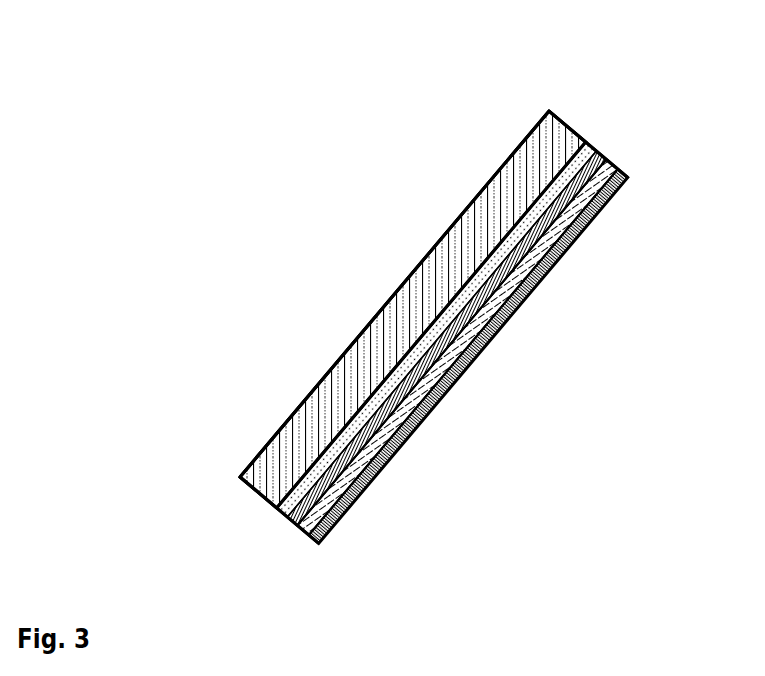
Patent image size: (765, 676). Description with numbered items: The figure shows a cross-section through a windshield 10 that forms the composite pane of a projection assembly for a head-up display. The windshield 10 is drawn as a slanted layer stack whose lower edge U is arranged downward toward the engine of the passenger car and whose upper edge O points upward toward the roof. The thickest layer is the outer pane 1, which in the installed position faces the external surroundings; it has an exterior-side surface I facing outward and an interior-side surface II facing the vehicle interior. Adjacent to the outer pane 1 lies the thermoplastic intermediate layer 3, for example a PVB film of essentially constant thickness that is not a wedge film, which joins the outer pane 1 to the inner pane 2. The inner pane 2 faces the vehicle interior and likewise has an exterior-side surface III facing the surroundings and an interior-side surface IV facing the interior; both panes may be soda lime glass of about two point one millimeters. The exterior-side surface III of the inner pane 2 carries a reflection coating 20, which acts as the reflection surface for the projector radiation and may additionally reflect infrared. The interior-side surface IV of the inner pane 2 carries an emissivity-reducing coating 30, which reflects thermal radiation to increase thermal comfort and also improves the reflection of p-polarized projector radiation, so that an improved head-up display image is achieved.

The windshield 10 is at (305, 230).
The outer pane 1 is at (493, 202).
The thermoplastic intermediate layer 3 is at (588, 148).
The reflection coating 20 is at (600, 157).
The inner pane 2 is at (614, 163).
The emissivity-reducing coating 30 is at (627, 178).
The upper edge O is at (565, 112).
The lower edge U is at (272, 506).
The exterior-side surface of the outer pane I is at (297, 400).
The interior-side surface of the outer pane II is at (294, 482).
The exterior-side surface of the inner pane III is at (429, 385).
The interior-side surface of the inner pane IV is at (404, 442).